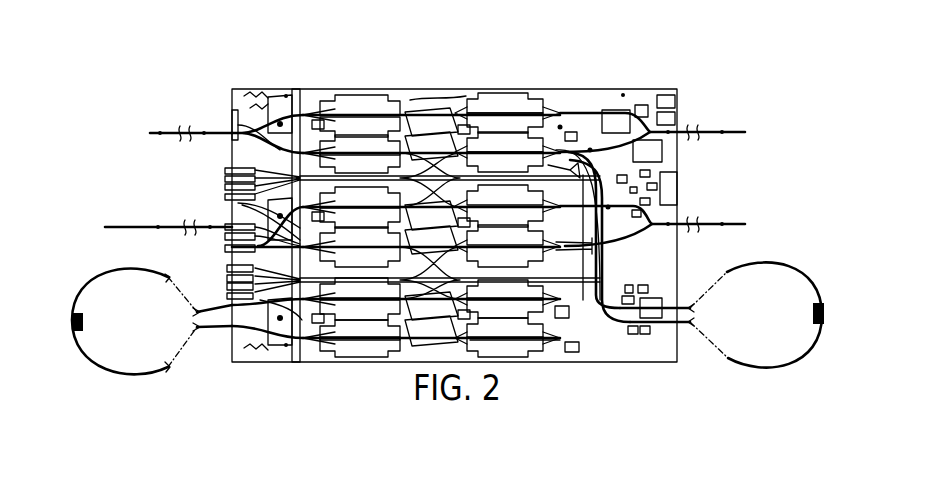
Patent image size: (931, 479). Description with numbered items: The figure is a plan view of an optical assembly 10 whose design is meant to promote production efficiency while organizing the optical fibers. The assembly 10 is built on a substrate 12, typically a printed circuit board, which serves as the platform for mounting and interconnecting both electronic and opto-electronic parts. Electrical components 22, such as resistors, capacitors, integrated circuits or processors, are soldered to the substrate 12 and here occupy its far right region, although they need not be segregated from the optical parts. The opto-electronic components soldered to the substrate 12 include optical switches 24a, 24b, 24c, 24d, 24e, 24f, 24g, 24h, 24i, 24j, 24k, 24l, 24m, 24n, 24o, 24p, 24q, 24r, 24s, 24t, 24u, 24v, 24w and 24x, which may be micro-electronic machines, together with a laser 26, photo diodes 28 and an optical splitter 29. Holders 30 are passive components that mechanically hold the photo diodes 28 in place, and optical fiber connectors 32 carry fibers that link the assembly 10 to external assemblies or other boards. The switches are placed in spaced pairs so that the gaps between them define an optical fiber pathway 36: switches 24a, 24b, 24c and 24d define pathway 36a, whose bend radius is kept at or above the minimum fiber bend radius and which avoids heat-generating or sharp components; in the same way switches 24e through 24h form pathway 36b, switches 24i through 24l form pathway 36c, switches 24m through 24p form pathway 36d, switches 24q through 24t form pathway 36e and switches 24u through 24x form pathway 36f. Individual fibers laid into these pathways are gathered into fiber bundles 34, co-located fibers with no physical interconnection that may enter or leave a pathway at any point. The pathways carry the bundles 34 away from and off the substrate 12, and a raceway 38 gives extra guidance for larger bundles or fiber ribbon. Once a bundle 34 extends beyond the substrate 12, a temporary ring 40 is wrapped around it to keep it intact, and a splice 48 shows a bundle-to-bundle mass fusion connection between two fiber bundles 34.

The optical assembly 10 is at (298, 56).
The substrate 12 is at (600, 91).
The electrical components 22 is at (586, 388).
The optical switch 24a is at (360, 105).
The optical switch 24b is at (360, 127).
The optical switch 24c is at (505, 103).
The optical switch 24d is at (505, 123).
The optical switch 24e is at (360, 145).
The optical switch 24f is at (360, 163).
The optical switch 24g is at (505, 142).
The optical switch 24h is at (505, 162).
The optical switch 24i is at (360, 197).
The optical switch 24j is at (360, 218).
The optical switch 24k is at (505, 195).
The optical switch 24l is at (505, 217).
The optical switch 24m is at (360, 237).
The optical switch 24n is at (360, 257).
The optical switch 24o is at (505, 235).
The optical switch 24p is at (505, 257).
The optical switch 24q is at (360, 288).
The optical switch 24r is at (360, 310).
The optical switch 24s is at (505, 290).
The optical switch 24t is at (505, 308).
The optical switch 24u is at (360, 330).
The optical switch 24v is at (360, 347).
The optical switch 24w is at (505, 328).
The optical switch 24x is at (505, 347).
The laser 26 is at (566, 254).
The photo diode 28 is at (403, 436).
The optical splitter 29 is at (256, 172).
The holder 30 is at (450, 226).
The optical fiber connector 32 is at (216, 298).
The fiber bundle 34 is at (90, 289).
The optical fiber pathway 36 is at (562, 184).
The optical fiber pathway 36a is at (458, 91).
The optical fiber pathway 36b is at (230, 148).
The optical fiber pathway 36c is at (232, 205).
The optical fiber pathway 36d is at (232, 236).
The optical fiber pathway 36e is at (292, 362).
The optical fiber pathway 36f is at (390, 360).
The raceway 38 is at (603, 262).
The temporary ring 40 is at (170, 129).
The splice 48 is at (68, 320).